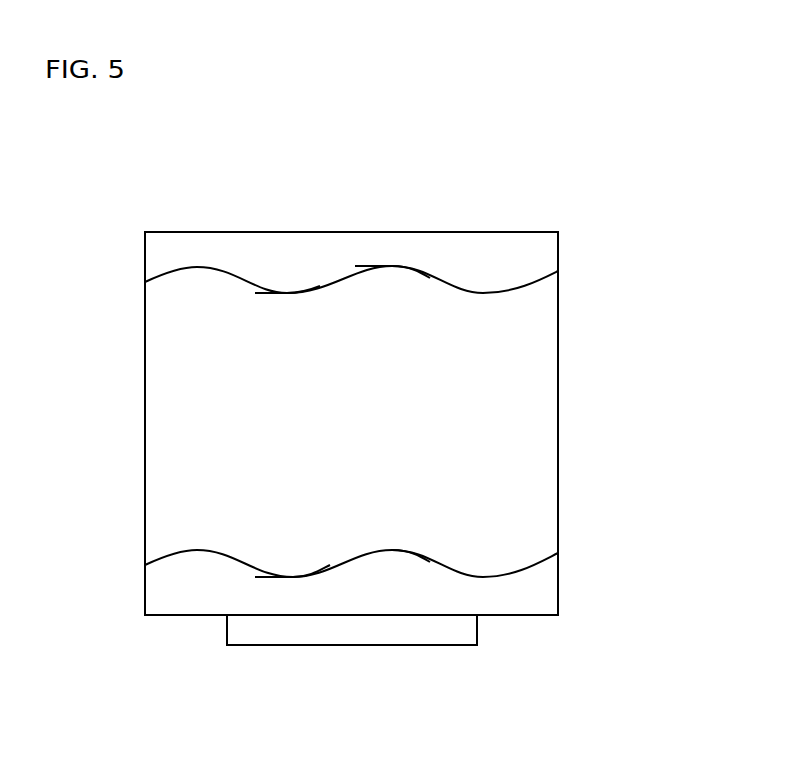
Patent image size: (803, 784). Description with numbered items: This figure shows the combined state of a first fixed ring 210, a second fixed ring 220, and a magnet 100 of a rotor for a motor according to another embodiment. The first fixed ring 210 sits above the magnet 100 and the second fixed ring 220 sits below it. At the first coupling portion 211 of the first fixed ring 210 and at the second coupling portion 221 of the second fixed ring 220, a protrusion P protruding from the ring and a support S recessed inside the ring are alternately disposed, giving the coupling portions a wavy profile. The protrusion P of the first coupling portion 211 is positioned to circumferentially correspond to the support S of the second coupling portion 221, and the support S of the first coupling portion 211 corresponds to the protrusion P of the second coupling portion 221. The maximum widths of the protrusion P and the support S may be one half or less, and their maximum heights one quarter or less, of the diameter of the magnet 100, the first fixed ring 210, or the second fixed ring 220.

The magnet 100 is at (551, 420).
The first fixed ring 210 is at (497, 237).
The first coupling portion 211 is at (288, 240).
The second fixed ring 220 is at (447, 600).
The second coupling portion 221 is at (371, 604).
The support S is at (392, 266).
The protrusion P is at (289, 293).